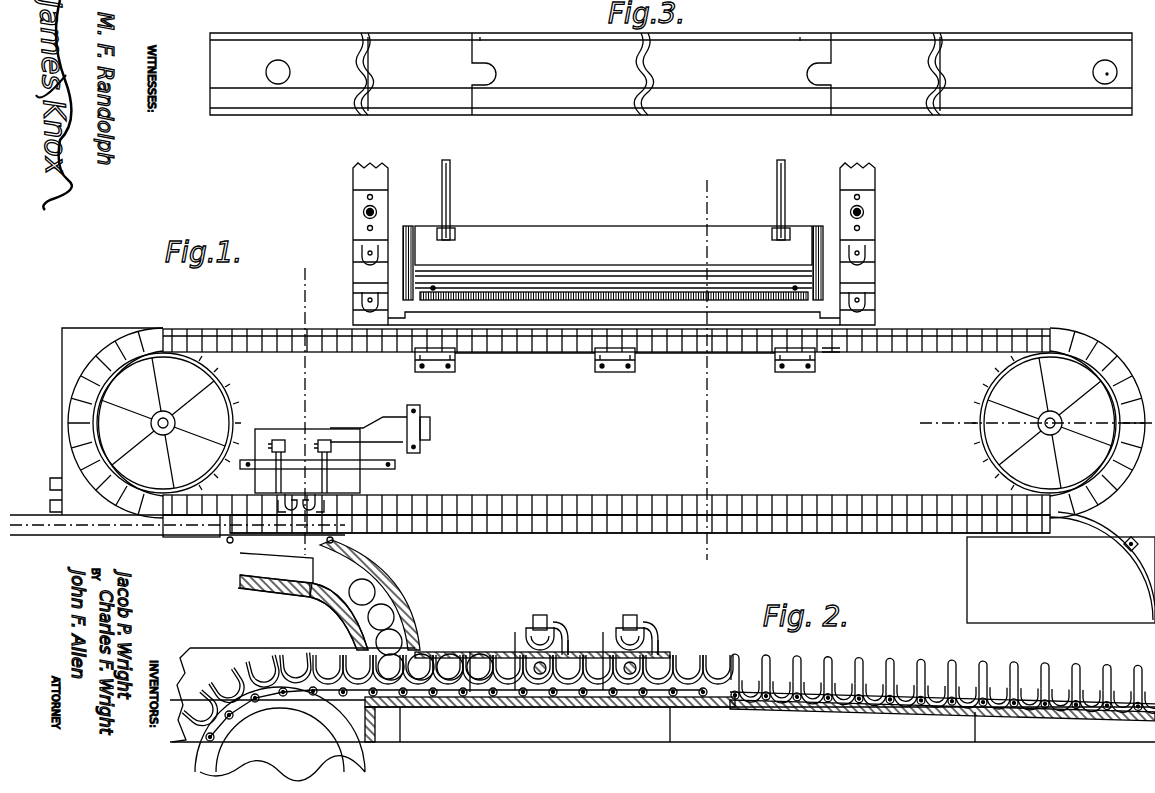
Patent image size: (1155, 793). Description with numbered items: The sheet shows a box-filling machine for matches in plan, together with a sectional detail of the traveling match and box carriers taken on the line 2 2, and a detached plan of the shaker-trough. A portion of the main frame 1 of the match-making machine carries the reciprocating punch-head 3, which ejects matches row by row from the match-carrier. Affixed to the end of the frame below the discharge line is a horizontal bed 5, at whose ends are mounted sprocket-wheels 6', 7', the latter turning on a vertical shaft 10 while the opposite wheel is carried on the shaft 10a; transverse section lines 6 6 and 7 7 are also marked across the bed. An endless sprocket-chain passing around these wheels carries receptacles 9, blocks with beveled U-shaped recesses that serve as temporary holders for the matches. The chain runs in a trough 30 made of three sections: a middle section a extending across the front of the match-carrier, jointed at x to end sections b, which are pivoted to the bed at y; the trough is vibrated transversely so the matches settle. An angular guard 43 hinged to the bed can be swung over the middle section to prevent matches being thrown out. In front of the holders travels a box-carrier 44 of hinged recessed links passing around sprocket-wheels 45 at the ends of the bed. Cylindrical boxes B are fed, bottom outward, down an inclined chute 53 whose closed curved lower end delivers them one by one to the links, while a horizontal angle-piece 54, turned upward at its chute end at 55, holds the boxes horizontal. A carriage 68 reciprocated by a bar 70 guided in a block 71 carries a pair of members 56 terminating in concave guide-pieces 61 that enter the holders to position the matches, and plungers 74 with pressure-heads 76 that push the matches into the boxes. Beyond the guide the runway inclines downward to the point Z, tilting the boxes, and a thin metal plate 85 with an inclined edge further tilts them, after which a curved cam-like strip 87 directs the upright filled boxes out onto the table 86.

In FIG. 1, the main frame 1 is at (877, 197).
In FIG. 1, the section line 2 2 is at (63, 536).
In FIG. 1, the reciprocating punch-head 3 is at (614, 242).
In FIG. 1, the horizontal bed 5 is at (60, 434).
In FIG. 1, the section line 6 6 is at (705, 369).
In FIG. 1, the sprocket-wheel 6' is at (167, 423).
In FIG. 1, the section line 7 7 is at (301, 406).
In FIG. 1, the sprocket-wheel 7' is at (1046, 423).
In FIG. 1, the receptacles 9 is at (262, 332).
In FIG. 2, the receptacles 9 is at (1002, 656).
In FIG. 1, the vertical shaft 10 is at (1057, 421).
In FIG. 1, the shaft 10a is at (151, 423).
In FIG. 3, the trough 30 is at (677, 108).
In FIG. 1, the trough 30 is at (846, 352).
In FIG. 1, the angular guard 43 is at (526, 355).
In FIG. 1, the box-carrier 44 is at (832, 533).
In FIG. 2, the box-carrier 44 is at (235, 670).
In FIG. 2, the sprocket-wheels 45 is at (280, 734).
In FIG. 1, the inclined chute 53 is at (146, 536).
In FIG. 2, the inclined chute 53 is at (282, 590).
In FIG. 1, the angle-piece 54 is at (236, 540).
In FIG. 2, the angle-piece 54 is at (462, 652).
In FIG. 2, the upturned end 55 is at (470, 650).
In FIG. 1, the members 56 is at (320, 498).
In FIG. 2, the members 56 is at (603, 642).
In FIG. 2, the guide-pieces 61 is at (528, 624).
In FIG. 1, the carriage 68 is at (283, 429).
In FIG. 1, the bar 70 is at (396, 417).
In FIG. 1, the block 71 is at (425, 412).
In FIG. 1, the plungers 74 is at (322, 440).
In FIG. 2, the pressure-heads 76 is at (530, 654).
In FIG. 1, the thin metal plate 85 is at (772, 506).
In FIG. 1, the table 86 is at (928, 520).
In FIG. 1, the cam-like strip 87 is at (1140, 584).
In FIG. 2, the cylindrical boxes B is at (368, 616).
In FIG. 2, the point z Z is at (970, 714).
In FIG. 3, the middle section a is at (640, 56).
In FIG. 3, the end sections b is at (692, 74).
In FIG. 3, the joints x is at (805, 68).
In FIG. 3, the pivots y is at (1096, 64).